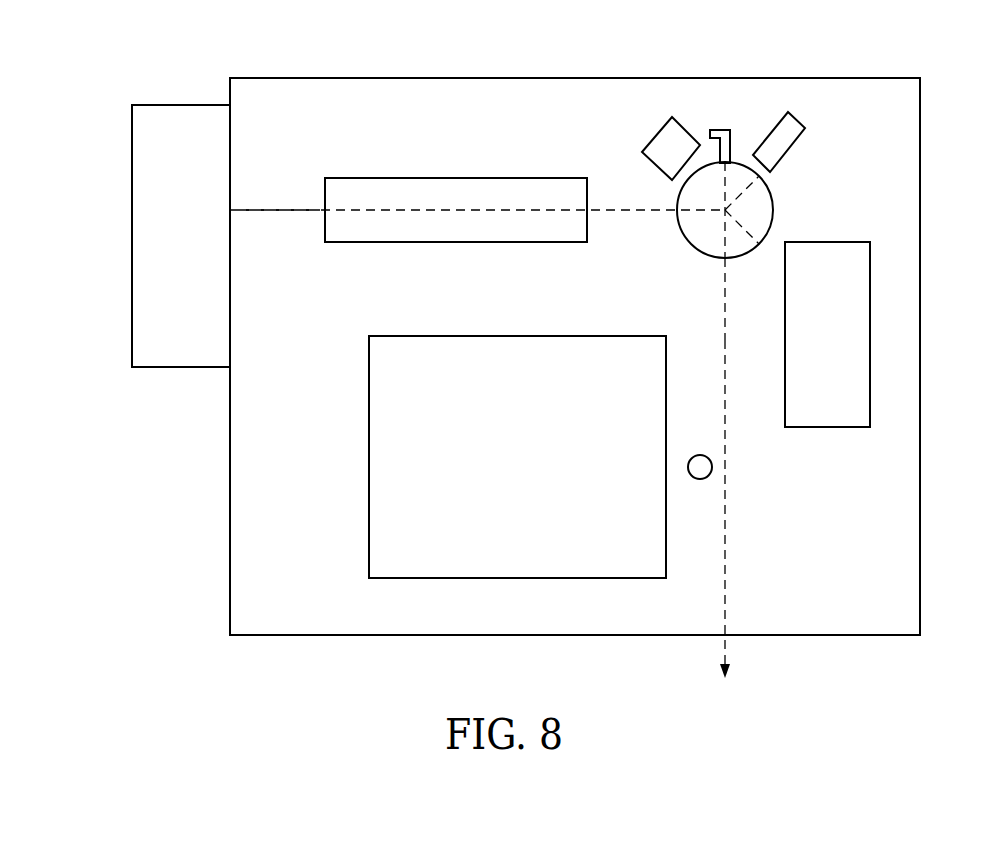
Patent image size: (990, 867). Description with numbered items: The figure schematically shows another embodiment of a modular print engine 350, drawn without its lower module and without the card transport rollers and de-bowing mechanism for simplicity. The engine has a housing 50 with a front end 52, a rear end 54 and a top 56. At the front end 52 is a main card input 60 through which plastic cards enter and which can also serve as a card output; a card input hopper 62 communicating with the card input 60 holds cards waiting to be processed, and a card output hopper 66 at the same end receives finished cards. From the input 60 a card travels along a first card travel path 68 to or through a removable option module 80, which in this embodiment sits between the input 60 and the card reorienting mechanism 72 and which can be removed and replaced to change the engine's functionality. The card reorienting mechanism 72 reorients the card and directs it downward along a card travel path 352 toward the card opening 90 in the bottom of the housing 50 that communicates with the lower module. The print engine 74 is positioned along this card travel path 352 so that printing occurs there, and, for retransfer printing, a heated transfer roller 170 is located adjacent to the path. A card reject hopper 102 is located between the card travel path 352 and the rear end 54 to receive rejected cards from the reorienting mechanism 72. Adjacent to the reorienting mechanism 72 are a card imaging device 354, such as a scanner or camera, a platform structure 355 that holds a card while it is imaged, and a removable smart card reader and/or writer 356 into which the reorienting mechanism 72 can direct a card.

The housing 50 is at (309, 68).
The front end 52 is at (230, 474).
The rear end 54 is at (921, 512).
The top 56 is at (368, 78).
The main card input 60 is at (231, 208).
The card input hopper 62 is at (175, 114).
The card output hopper 66 is at (175, 360).
The first card travel path 68 is at (290, 213).
The card reorienting mechanism 72 is at (773, 210).
The print engine 74 is at (369, 456).
The removable option module 80 is at (449, 178).
The card opening 90 is at (725, 640).
The card reject hopper 102 is at (828, 428).
The heated transfer roller 170 is at (700, 455).
The modular print engine 350 is at (128, 552).
The card travel path 352 is at (725, 314).
The card imaging device 354 is at (648, 138).
The platform structure 355 is at (720, 128).
The smart card reader and/or writer 356 is at (790, 148).